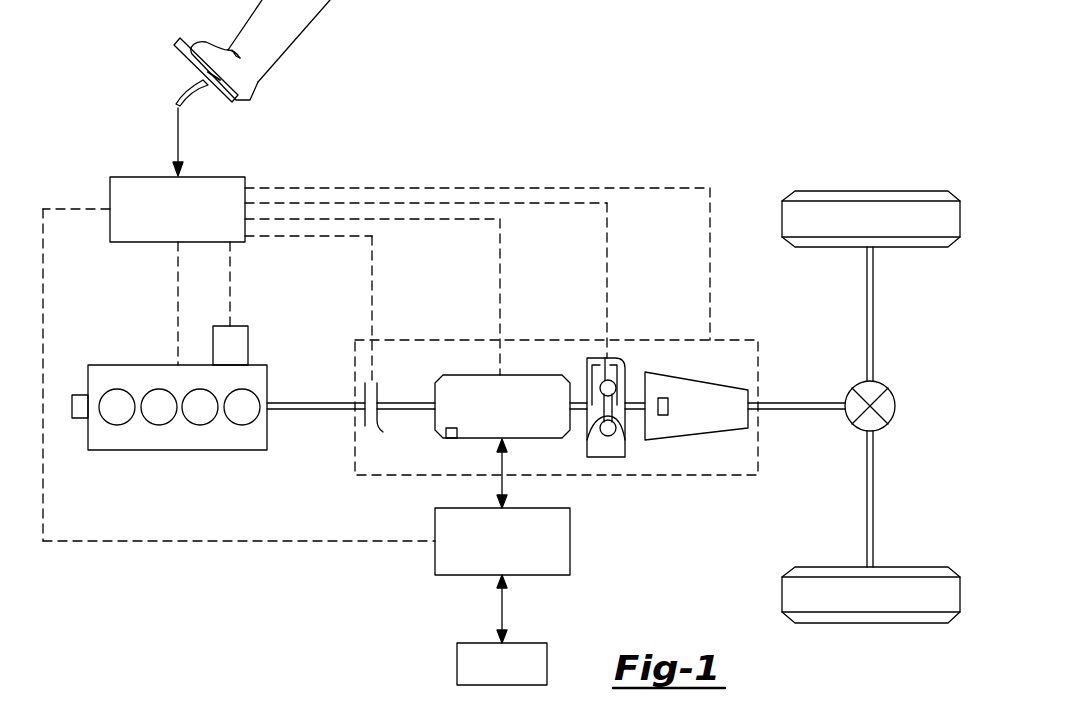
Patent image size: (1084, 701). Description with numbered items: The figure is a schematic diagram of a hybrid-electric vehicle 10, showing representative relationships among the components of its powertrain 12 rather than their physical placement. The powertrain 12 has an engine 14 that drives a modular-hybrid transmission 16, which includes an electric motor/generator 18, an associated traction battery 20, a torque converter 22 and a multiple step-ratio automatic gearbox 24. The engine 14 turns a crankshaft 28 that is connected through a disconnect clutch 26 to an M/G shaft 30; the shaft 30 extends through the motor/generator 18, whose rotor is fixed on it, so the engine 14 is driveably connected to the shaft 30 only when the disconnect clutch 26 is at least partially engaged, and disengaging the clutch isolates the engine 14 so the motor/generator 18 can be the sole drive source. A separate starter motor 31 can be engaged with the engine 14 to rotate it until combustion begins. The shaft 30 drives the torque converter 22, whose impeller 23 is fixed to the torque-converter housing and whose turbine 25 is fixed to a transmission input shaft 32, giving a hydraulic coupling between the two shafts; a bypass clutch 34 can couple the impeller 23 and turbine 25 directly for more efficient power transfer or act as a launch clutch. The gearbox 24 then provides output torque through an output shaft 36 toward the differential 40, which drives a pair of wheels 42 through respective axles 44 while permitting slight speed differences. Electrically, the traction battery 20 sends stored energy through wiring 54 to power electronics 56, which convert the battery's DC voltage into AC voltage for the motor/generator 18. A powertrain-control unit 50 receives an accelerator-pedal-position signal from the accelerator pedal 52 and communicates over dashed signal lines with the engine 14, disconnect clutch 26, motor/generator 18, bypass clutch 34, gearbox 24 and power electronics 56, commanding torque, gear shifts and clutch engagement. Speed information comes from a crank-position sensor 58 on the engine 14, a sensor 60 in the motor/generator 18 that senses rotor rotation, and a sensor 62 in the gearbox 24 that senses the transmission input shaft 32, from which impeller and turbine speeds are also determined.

The hybrid-electric vehicle 10 is at (723, 124).
The powertrain 12 is at (305, 578).
The engine 14 is at (105, 364).
The transmission 16 is at (541, 338).
The electric motor/generator 18 is at (478, 374).
The traction battery 20 is at (457, 664).
The torque converter 22 is at (600, 458).
The impeller 23 is at (622, 436).
The gearbox 24 is at (690, 441).
The turbine 25 is at (588, 436).
The disconnect clutch 26 is at (368, 430).
The crankshaft 28 is at (334, 401).
The M/G shaft 30 is at (410, 401).
The starter motor 31 is at (243, 325).
The transmission input shaft 32 is at (636, 401).
The torque converter bypass clutch 34 is at (604, 358).
The output shaft 36 is at (809, 401).
The differential 40 is at (896, 406).
The wheels 42 is at (835, 190).
The axles 44 is at (875, 315).
The powertrain-control unit 50 is at (127, 176).
The accelerator pedal 52 is at (172, 62).
The wiring 54 is at (495, 608).
The power electronics 56 is at (570, 540).
The crank-position sensor 58 is at (78, 420).
The motor speed sensor 60 is at (446, 436).
The transmission input shaft speed sensor 62 is at (663, 397).